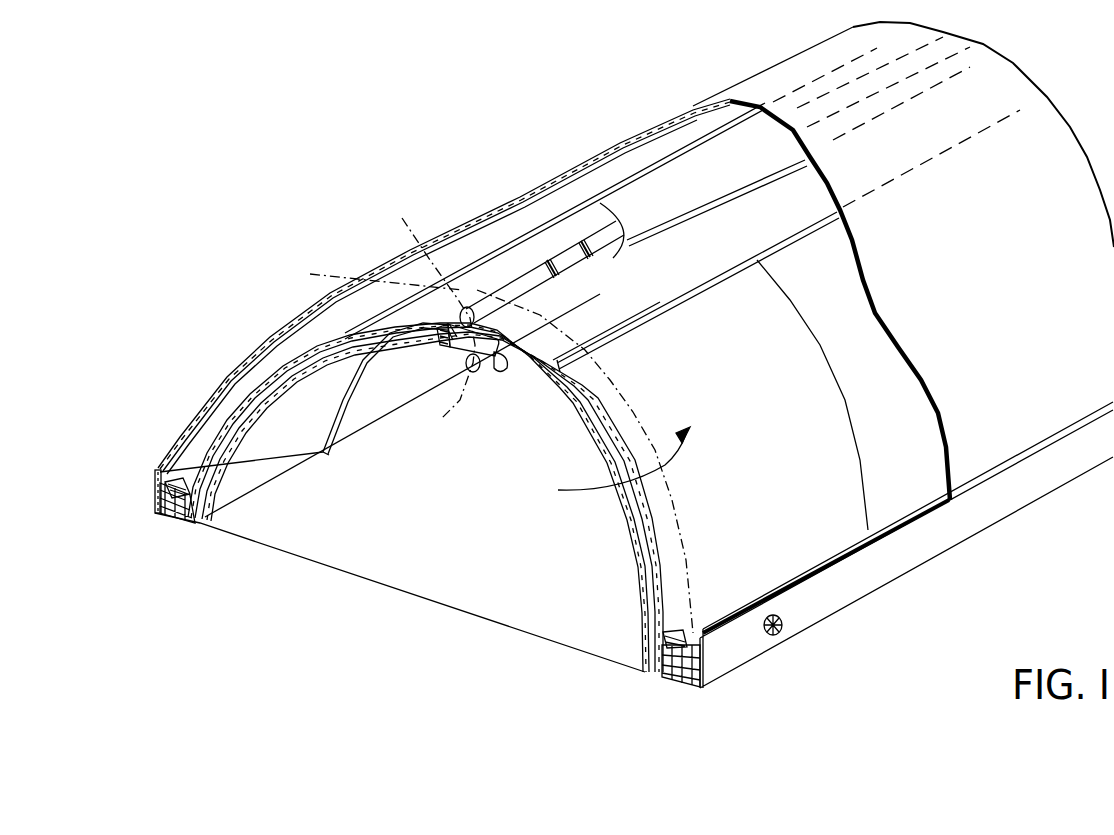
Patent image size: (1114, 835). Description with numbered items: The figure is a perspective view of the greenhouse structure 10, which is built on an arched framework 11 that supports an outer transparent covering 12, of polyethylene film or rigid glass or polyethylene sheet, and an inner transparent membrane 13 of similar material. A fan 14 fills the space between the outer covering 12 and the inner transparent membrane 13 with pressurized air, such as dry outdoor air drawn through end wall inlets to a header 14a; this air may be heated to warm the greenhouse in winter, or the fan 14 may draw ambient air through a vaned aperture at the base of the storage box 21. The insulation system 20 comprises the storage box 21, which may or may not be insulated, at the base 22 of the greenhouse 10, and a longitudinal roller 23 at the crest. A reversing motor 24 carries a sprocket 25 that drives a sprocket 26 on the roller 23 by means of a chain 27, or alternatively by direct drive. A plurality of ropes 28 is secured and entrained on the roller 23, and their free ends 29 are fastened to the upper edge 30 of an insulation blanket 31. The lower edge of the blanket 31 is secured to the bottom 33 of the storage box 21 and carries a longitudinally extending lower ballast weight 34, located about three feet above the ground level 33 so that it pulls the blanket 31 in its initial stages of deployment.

The greenhouse structure 10 is at (450, 178).
The arched framework 11 is at (347, 418).
The outer transparent covering 12 is at (272, 338).
The inner transparent membrane 13 is at (233, 428).
The fan 14 is at (446, 342).
The header 14a is at (502, 338).
The insulation system 20 is at (585, 461).
The storage box 21 is at (155, 483).
The base 22 is at (400, 483).
The longitudinal roller 23 is at (754, 180).
The reversing motor 24 is at (500, 362).
The sprocket 25 is at (472, 375).
The sprocket 26 is at (413, 232).
The chain 27 is at (447, 380).
The ropes 28 is at (600, 204).
The free ends 29 is at (660, 303).
The upper edge 30 is at (645, 305).
The insulation blanket 31 is at (236, 410).
The bottom 33 is at (193, 522).
The lower ballast weight 34 is at (183, 480).